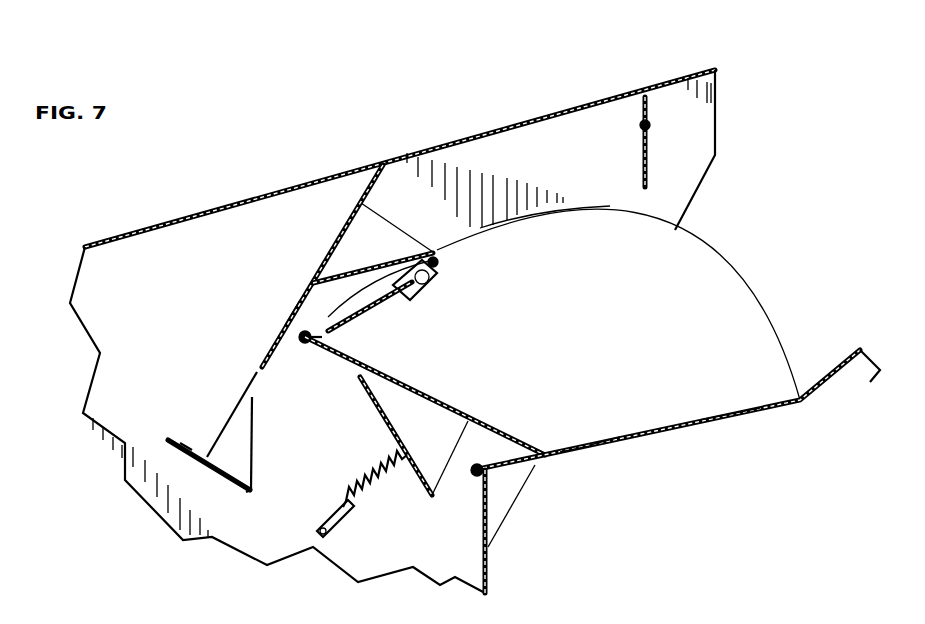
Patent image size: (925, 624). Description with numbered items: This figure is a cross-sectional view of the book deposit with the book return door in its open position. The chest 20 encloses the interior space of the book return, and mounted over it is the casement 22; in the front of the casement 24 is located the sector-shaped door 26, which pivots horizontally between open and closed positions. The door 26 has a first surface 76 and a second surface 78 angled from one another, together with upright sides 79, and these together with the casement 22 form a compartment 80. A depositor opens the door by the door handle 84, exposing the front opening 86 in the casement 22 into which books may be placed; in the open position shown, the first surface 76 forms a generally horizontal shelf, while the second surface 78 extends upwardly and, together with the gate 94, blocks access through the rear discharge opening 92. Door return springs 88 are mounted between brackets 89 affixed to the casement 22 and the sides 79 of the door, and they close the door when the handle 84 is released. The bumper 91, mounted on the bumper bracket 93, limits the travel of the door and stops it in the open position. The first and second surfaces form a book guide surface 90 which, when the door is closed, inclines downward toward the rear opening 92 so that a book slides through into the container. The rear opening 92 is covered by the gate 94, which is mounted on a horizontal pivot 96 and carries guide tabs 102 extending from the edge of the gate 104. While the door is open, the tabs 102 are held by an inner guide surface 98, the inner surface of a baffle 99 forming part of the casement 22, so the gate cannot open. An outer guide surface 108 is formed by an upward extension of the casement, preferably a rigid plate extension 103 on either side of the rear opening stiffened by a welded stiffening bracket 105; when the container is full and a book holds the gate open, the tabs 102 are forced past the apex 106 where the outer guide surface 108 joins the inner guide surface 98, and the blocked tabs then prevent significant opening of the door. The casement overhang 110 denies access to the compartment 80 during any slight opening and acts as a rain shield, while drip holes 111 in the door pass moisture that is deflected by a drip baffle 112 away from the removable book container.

The chest 20 is at (487, 563).
The casement 22 is at (298, 186).
The front of the casement 24 is at (700, 188).
The sector-shaped door 26 is at (752, 416).
The first surface 76 is at (703, 418).
The second surface 78 is at (490, 424).
The upright sides 79 is at (610, 210).
The compartment 80 is at (577, 450).
The door handle 84 is at (863, 368).
The front opening 86 is at (738, 273).
The door return springs 88 is at (388, 455).
The brackets 89 is at (340, 528).
The book guide surface 90 is at (605, 436).
The bumper 91 is at (438, 263).
The rear discharge opening 92 is at (260, 378).
The bumper bracket 93 is at (378, 263).
The gate 94 is at (353, 314).
The horizontal pivot 96 is at (422, 288).
The inner guide surface 98 is at (255, 453).
The baffle 99 is at (279, 338).
The guide tabs 102 is at (287, 332).
The rigid plate extension 103 is at (185, 445).
The edge of the gate 104 is at (292, 320).
The stiffening bracket 105 is at (230, 410).
The apex 106 is at (248, 492).
The outer guide surface 108 is at (180, 463).
The casement overhang 110 is at (716, 70).
The drip holes 111 is at (420, 393).
The drip baffle 112 is at (423, 483).